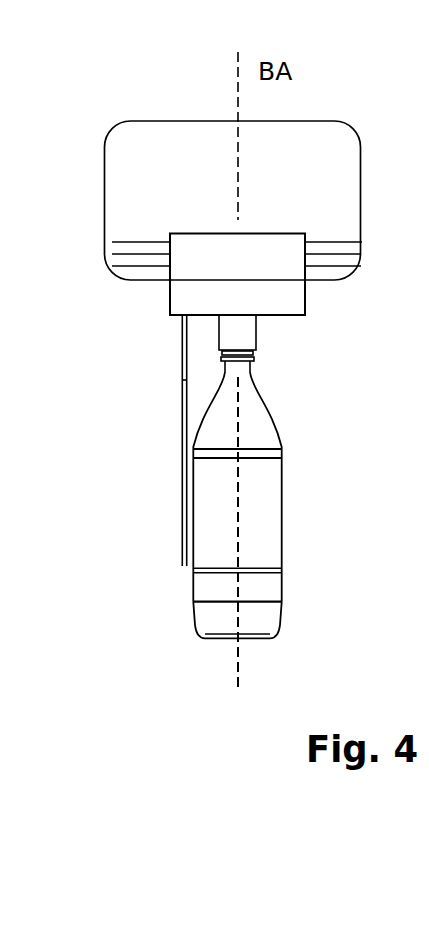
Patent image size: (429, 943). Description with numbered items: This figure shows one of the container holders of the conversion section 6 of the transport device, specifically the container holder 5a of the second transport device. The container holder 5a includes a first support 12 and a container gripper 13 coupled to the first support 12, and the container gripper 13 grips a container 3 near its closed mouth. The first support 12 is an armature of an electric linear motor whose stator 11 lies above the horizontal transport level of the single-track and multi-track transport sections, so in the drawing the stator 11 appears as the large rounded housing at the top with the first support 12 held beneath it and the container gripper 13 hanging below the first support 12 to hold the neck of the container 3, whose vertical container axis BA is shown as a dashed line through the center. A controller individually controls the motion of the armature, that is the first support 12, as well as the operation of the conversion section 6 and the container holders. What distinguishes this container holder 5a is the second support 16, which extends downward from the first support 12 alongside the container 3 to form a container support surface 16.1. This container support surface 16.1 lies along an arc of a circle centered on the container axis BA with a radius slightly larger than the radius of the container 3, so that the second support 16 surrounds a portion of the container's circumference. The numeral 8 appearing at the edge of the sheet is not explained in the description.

The conversion section 6 is at (67, 165).
The stator 11 is at (332, 167).
The first support 12 is at (297, 296).
The container gripper 13 is at (238, 333).
The container holder 5a is at (148, 314).
The second support 16 is at (182, 515).
The container support surface 16.1 is at (187, 387).
The container 3 is at (267, 545).
The supply line 8 is at (0, 668).